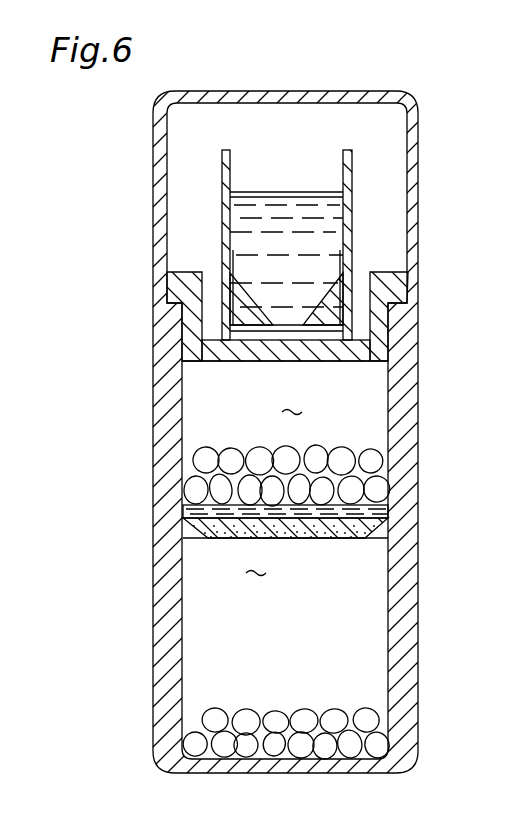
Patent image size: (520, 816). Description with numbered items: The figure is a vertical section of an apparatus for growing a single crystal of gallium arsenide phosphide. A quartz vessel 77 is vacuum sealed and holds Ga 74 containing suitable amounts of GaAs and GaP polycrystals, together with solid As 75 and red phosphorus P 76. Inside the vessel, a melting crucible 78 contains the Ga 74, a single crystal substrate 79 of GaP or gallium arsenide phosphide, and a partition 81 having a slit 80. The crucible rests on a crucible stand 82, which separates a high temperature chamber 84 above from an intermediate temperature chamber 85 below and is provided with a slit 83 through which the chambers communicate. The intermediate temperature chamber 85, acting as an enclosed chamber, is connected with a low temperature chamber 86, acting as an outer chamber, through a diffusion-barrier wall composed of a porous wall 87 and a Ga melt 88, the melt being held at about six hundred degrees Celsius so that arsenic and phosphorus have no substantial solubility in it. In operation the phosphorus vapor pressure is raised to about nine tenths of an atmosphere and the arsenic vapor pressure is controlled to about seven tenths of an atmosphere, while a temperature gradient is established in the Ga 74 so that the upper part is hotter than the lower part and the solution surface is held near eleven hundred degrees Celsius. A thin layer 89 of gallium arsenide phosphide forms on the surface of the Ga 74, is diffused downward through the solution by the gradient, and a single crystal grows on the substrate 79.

The Ga 74 is at (328, 222).
The solid As 75 is at (372, 476).
The P 76 is at (357, 740).
The quartz vessel 77 is at (419, 222).
The melting crucible 78 is at (346, 160).
The single crystal substrate 79 is at (243, 330).
The slit 80 is at (292, 325).
The partition 81 is at (337, 313).
The crucible stand 82 is at (385, 288).
The slit 83 is at (212, 361).
The high temperature chamber 84 is at (184, 244).
The intermediate temperature chamber 85 is at (376, 397).
The low temperature chamber 86 is at (360, 588).
The porous wall 87 is at (298, 532).
The Ga melt 88 is at (385, 513).
The thin layer 89 is at (270, 192).